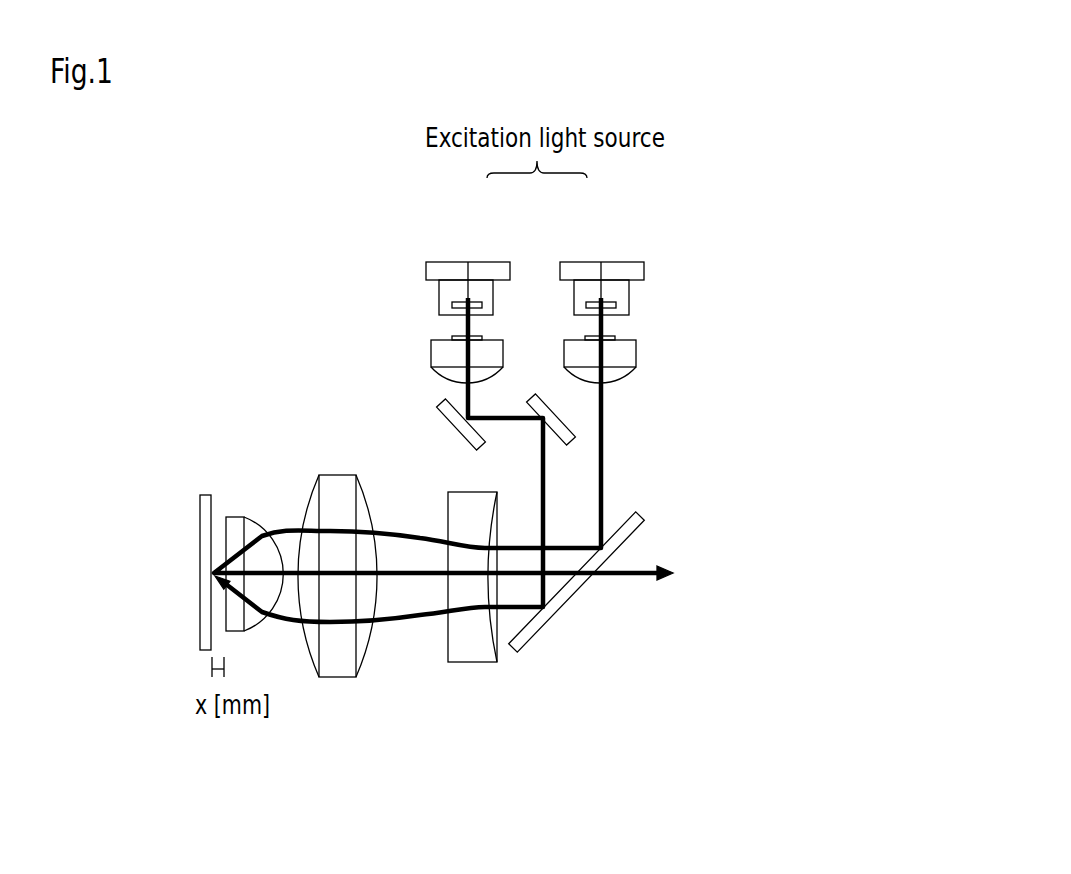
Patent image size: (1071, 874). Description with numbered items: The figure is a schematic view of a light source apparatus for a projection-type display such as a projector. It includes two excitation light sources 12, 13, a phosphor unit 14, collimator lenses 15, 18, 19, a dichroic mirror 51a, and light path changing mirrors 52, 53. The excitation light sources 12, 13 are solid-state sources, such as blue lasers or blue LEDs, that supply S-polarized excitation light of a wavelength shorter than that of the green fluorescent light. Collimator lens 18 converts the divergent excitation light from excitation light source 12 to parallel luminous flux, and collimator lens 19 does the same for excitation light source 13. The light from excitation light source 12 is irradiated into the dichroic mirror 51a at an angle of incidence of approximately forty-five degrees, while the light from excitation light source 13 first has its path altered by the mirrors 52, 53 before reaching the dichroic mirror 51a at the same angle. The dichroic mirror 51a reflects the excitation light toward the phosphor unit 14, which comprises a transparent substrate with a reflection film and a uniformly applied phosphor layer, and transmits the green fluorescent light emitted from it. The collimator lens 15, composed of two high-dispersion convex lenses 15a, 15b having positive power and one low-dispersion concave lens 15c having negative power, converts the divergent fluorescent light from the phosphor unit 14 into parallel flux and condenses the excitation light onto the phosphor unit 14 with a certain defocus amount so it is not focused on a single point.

The excitation light source 12 is at (607, 256).
The excitation light source 13 is at (463, 256).
The phosphor unit 14 is at (203, 495).
The collimator lens 15 is at (361, 671).
The convex lens 15a is at (245, 633).
The convex lens 15b is at (340, 678).
The concave lens 15c is at (453, 633).
The collimator lens 18 is at (637, 338).
The collimator lens 19 is at (432, 338).
The dichroic mirror 51a is at (640, 514).
The light path changing mirror 52 is at (440, 410).
The light path changing mirror 53 is at (576, 434).